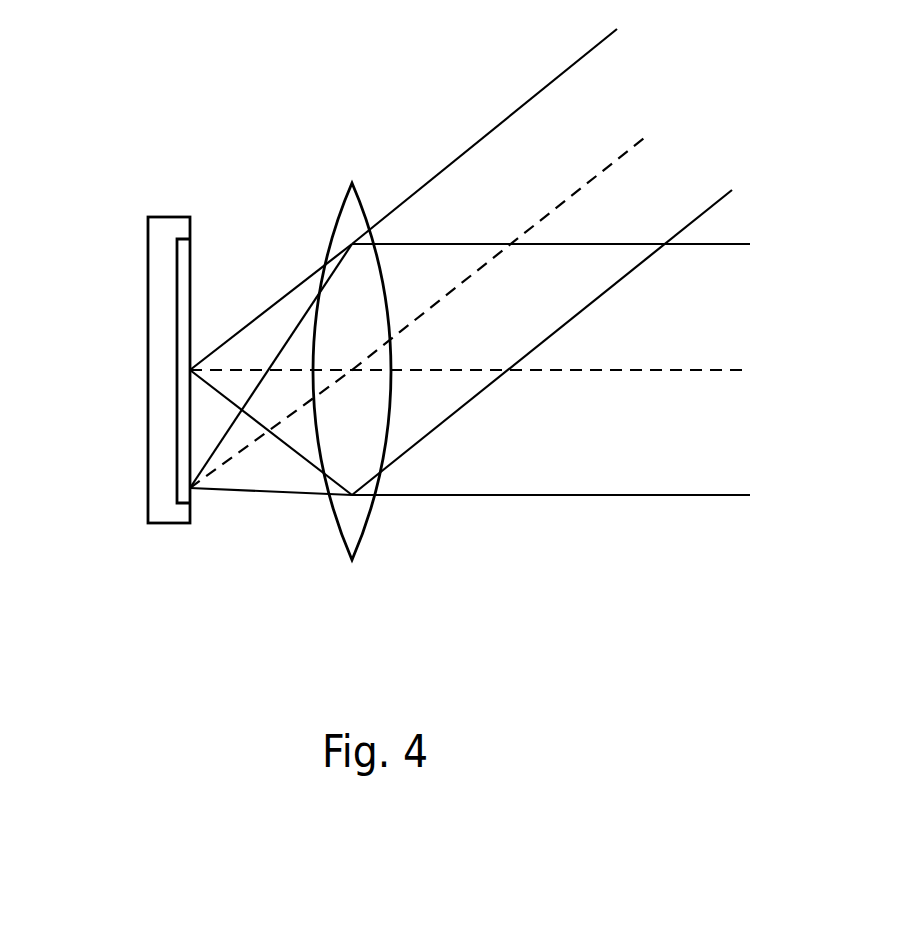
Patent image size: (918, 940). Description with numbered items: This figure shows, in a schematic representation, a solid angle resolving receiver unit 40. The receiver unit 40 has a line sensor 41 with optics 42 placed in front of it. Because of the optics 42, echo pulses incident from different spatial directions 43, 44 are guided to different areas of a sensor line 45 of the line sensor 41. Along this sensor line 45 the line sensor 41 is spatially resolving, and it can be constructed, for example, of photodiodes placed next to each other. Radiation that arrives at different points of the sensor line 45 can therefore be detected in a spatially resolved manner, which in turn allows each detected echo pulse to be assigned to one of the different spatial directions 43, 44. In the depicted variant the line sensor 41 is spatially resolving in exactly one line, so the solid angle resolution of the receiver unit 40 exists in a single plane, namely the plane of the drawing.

The solid angle resolving receiver unit 40 is at (108, 155).
The line sensor 41 is at (163, 483).
The optics 42 is at (352, 515).
The spatial direction 43 is at (622, 204).
The spatial direction 44 is at (680, 323).
The sensor line 45 is at (215, 323).